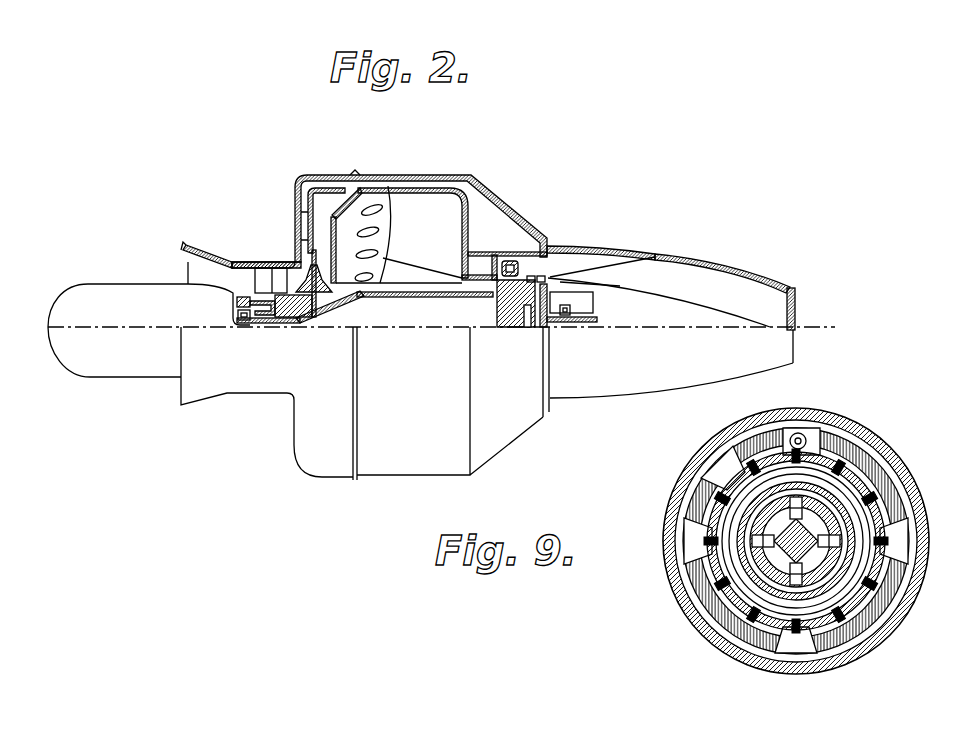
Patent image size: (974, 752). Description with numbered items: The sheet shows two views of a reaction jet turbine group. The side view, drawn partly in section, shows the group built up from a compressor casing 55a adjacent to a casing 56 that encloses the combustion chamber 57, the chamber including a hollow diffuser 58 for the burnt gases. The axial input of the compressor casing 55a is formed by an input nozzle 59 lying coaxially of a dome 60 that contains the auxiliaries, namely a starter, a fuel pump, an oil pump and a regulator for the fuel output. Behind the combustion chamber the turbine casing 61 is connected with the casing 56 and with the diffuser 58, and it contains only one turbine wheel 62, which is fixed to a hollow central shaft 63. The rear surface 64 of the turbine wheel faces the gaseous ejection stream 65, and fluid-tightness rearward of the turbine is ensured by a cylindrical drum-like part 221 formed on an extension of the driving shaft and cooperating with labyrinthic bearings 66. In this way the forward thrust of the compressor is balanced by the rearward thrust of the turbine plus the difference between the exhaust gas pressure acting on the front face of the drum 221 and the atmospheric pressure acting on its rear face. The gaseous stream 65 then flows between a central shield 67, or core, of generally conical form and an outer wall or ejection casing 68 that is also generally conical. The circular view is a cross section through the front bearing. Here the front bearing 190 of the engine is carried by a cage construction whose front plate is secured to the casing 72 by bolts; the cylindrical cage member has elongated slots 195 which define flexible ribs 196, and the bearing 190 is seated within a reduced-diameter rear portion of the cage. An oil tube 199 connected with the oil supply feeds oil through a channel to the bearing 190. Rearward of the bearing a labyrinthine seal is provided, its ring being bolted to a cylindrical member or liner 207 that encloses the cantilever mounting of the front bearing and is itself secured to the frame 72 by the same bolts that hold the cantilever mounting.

In FIG. 2, the dome 60 is at (80, 308).
In FIG. 2, the input nozzle 59 is at (193, 243).
In FIG. 2, the compressor casing 55a is at (258, 262).
In FIG. 2, the casing for the combustion chamber 56 is at (427, 176).
In FIG. 2, the combustion chamber 57 is at (437, 215).
In FIG. 2, the hollow diffuser 58 is at (514, 252).
In FIG. 2, the turbine wheel 62 is at (541, 262).
In FIG. 2, the turbine casing 61 is at (582, 246).
In FIG. 2, the hollow central shaft 63 is at (390, 226).
In FIG. 2, the rear surface of the turbine wheel 64 is at (663, 273).
In FIG. 2, the gaseous ejection stream 65 is at (700, 262).
In FIG. 2, the labyrinthic bearings 66 is at (733, 320).
In FIG. 2, the central shield 67 is at (778, 287).
In FIG. 2, the ejection casing 68 is at (605, 285).
In FIG. 2, the drum-like part 221 is at (541, 329).
In FIG. 9, the casing 72 is at (847, 424).
In FIG. 9, the oil tube 199 is at (777, 428).
In FIG. 9, the cylindrical member 207 is at (878, 474).
In FIG. 9, the flexible ribs 196 is at (866, 483).
In FIG. 9, the elongated slots 195 is at (868, 588).
In FIG. 9, the front bearing 190 is at (756, 567).